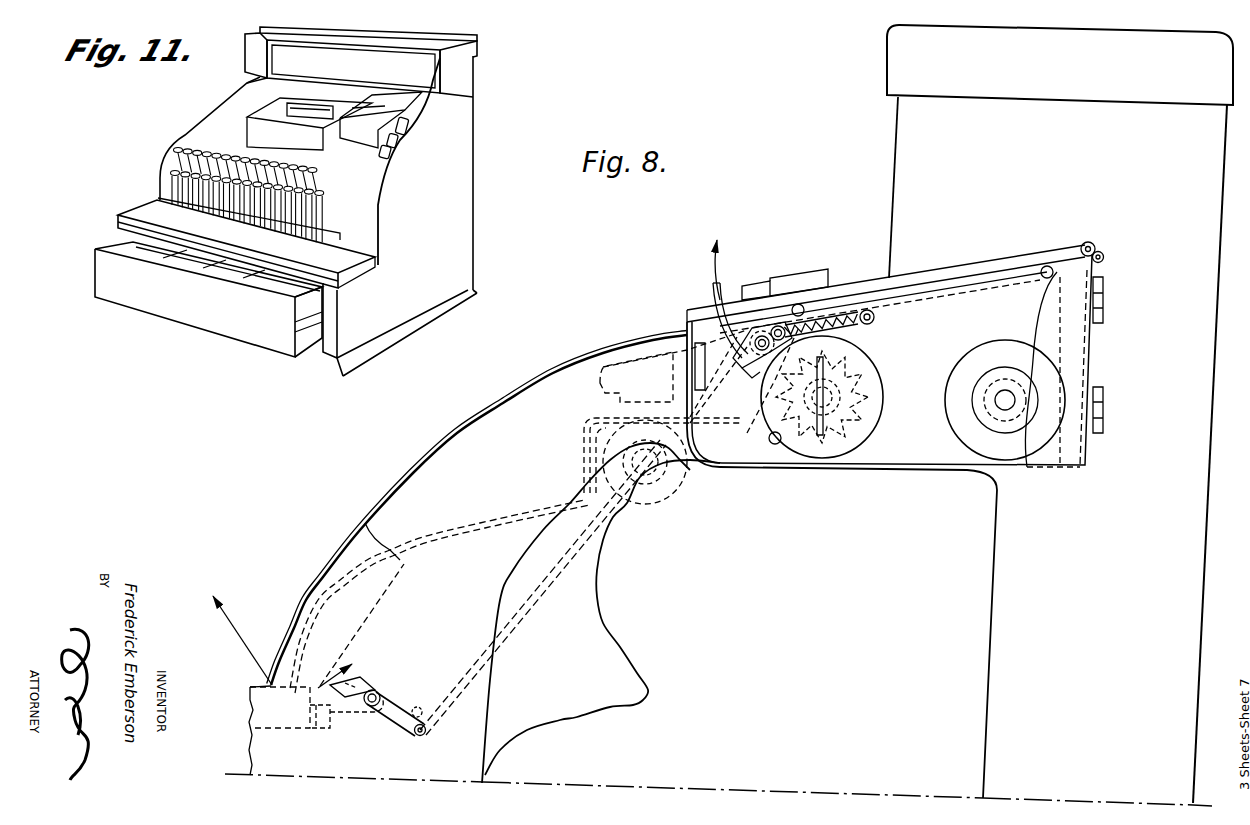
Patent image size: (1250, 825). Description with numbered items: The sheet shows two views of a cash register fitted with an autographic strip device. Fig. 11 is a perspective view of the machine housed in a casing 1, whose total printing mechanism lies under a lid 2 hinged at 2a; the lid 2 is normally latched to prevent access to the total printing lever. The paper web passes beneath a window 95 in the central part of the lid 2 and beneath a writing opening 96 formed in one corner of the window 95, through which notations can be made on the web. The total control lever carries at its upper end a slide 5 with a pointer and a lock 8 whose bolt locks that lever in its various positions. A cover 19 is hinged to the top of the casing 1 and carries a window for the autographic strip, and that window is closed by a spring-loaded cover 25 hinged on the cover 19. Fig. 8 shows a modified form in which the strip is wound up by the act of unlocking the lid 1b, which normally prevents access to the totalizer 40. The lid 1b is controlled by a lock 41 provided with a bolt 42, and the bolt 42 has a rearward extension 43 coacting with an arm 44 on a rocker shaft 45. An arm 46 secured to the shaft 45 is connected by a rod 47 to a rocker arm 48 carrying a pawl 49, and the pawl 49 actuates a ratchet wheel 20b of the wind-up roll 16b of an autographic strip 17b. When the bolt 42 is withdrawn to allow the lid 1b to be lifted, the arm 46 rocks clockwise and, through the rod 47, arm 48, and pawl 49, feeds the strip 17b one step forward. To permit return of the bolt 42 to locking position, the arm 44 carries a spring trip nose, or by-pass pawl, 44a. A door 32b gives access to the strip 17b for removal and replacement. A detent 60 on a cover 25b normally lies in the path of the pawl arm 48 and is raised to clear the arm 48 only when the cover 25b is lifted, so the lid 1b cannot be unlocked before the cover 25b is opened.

In FIG. 11, the casing 1 is at (197, 127).
In FIG. 11, the lid 2 is at (270, 97).
In FIG. 11, the hinge 2a is at (307, 88).
In FIG. 11, the slide 5 is at (403, 140).
In FIG. 11, the lock 8 is at (390, 162).
In FIG. 11, the cover 19 is at (422, 100).
In FIG. 11, the cover 25 is at (405, 125).
In FIG. 11, the window 95 is at (317, 110).
In FIG. 11, the writing opening 96 is at (268, 108).
In FIG. 8, the lid 1b is at (453, 428).
In FIG. 8, the wind-up roll 16b is at (860, 430).
In FIG. 8, the autographic strip 17b is at (1040, 337).
In FIG. 8, the ratchet wheel 20b is at (858, 384).
In FIG. 8, the cover 25b is at (942, 267).
In FIG. 8, the door 32b is at (1067, 450).
In FIG. 8, the totalizer 40 is at (583, 446).
In FIG. 8, the lock 41 is at (365, 523).
In FIG. 8, the bolt 42 is at (346, 664).
In FIG. 8, the rearward extension 43 is at (330, 730).
In FIG. 8, the arm 44 is at (358, 686).
In FIG. 8, the spring trip nose 44a is at (310, 690).
In FIG. 8, the rocker shaft 45 is at (382, 695).
In FIG. 8, the arm 46 is at (400, 718).
In FIG. 8, the rod 47 is at (537, 603).
In FIG. 8, the rocker arm 48 is at (770, 362).
In FIG. 8, the pawl 49 is at (780, 385).
In FIG. 8, the detent 60 is at (732, 320).